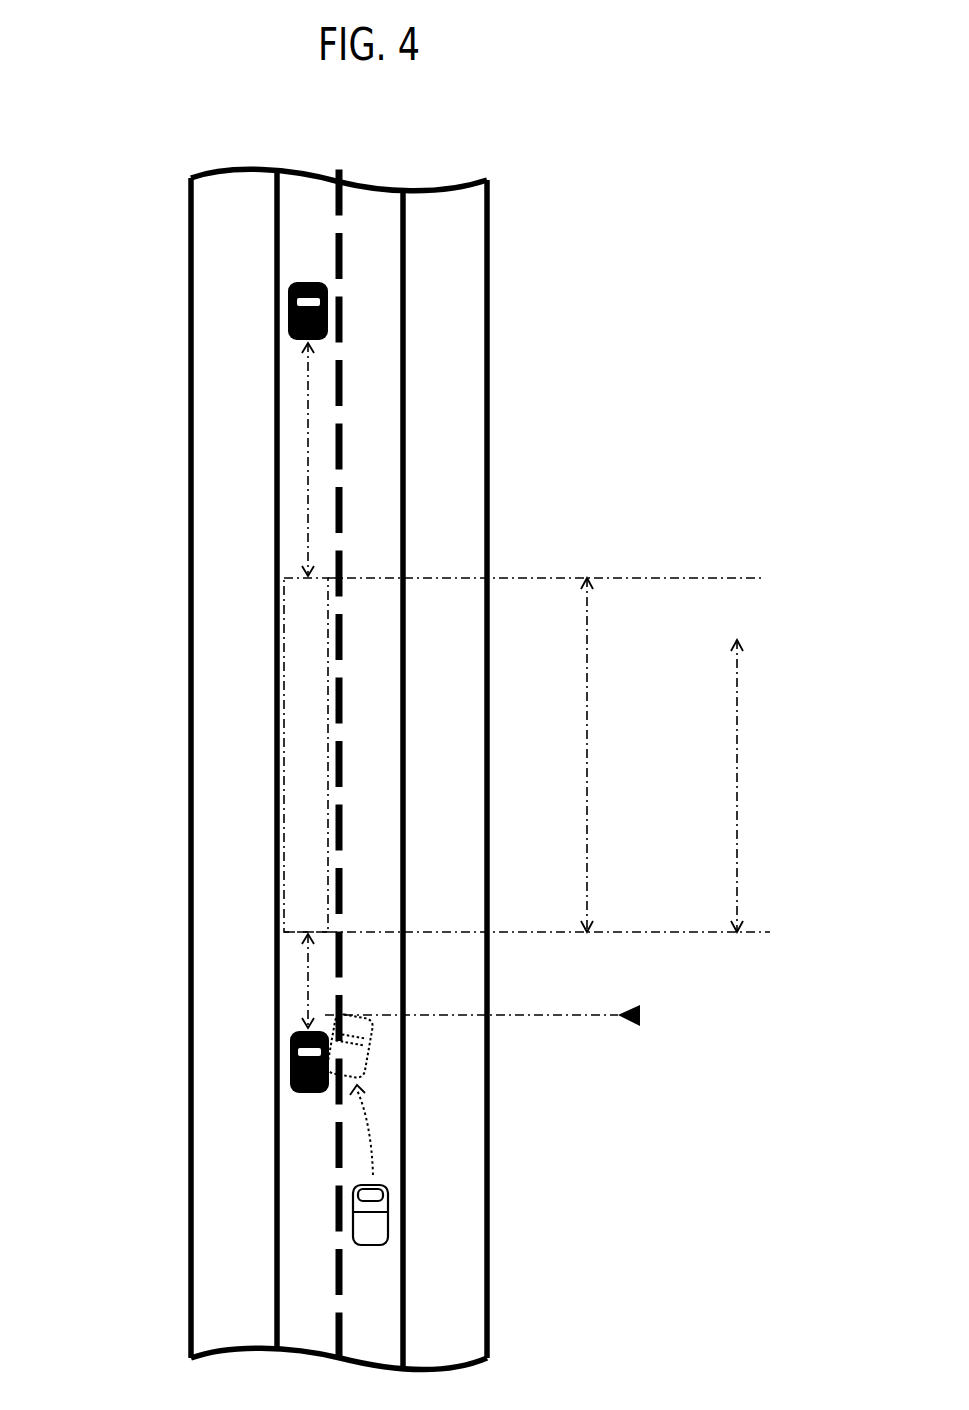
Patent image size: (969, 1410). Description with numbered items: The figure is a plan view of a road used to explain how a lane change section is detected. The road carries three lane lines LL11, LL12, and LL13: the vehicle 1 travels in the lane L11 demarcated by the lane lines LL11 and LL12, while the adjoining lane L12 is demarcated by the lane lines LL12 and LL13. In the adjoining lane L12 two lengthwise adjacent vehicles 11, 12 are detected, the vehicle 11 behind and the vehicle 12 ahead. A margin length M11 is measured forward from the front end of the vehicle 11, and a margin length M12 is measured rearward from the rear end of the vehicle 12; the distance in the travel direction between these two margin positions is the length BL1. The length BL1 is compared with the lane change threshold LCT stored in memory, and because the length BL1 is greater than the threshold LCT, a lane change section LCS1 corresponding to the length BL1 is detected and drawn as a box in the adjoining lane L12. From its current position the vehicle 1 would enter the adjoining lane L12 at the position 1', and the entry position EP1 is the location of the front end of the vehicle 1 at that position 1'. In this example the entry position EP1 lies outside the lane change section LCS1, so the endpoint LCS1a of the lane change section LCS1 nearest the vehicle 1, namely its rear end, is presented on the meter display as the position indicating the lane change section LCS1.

The vehicle 1 is at (460, 1181).
The position 1' is at (454, 1057).
The adjacent vehicle 11 is at (290, 1080).
The adjacent vehicle 12 is at (290, 323).
The lane L11 is at (388, 235).
The adjoining lane L12 is at (302, 230).
The lane line LL11 is at (403, 174).
The lane line LL12 is at (339, 169).
The lane line LL13 is at (277, 168).
The margin length M12 is at (308, 480).
The margin length M11 is at (308, 980).
The lane change section LCS1 is at (299, 705).
The endpoint LCS1a is at (290, 930).
The length BL1 is at (587, 780).
The lane change threshold LCT is at (737, 780).
The entry position EP1 is at (510, 1016).